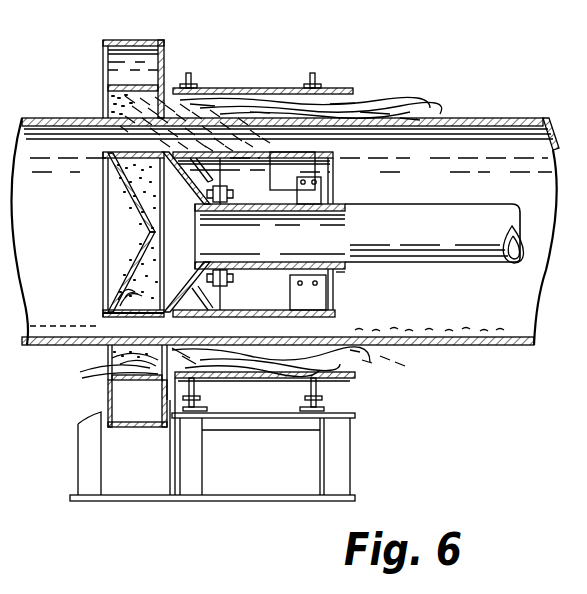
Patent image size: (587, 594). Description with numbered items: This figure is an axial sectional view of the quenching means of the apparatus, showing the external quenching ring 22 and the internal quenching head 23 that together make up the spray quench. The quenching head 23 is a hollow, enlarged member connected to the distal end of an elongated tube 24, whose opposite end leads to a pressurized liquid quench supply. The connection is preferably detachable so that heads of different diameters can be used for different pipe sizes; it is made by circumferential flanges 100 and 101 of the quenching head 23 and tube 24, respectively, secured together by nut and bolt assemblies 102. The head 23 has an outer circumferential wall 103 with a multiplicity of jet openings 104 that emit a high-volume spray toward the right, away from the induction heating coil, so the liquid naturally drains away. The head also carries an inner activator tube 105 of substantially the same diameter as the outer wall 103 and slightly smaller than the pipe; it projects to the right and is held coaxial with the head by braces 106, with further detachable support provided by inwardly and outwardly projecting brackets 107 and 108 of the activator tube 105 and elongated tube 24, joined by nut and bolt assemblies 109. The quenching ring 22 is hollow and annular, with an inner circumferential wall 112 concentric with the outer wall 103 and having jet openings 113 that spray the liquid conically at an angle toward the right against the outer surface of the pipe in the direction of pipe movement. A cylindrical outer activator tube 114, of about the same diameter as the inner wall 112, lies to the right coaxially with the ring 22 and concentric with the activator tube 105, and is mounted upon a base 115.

The external quenching ring 22 is at (108, 43).
The inner circumferential wall 112 is at (128, 88).
The cylindrical outer activator tube 114 is at (264, 88).
The circumferential flange 101 is at (220, 186).
The outwardly projecting bracket 108 is at (330, 188).
The nut and bolt assemblies 102 is at (240, 268).
The elongated tube 24 is at (468, 206).
The inner activator tube 105 is at (340, 306).
The inwardly projecting bracket 107 is at (330, 290).
The nut and bolt assemblies 109 is at (345, 266).
The circumferential flange 100 is at (220, 272).
The internal quenching head 23 is at (108, 190).
The braces 106 is at (200, 302).
The jet openings 104 is at (124, 304).
The outer circumferential wall 103 is at (110, 312).
The jet openings 113 is at (100, 378).
The base 115 is at (338, 413).